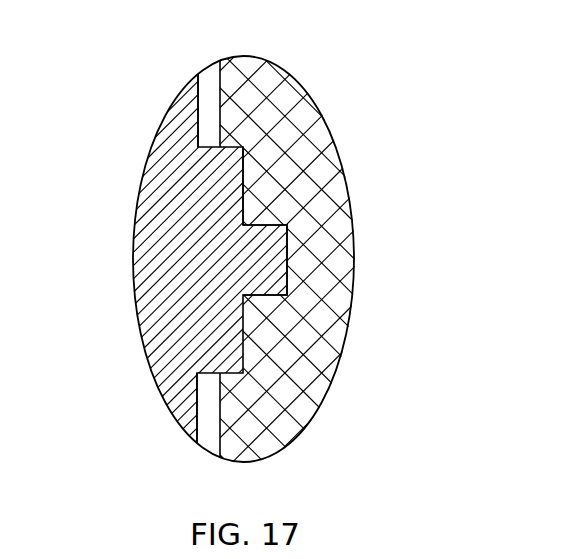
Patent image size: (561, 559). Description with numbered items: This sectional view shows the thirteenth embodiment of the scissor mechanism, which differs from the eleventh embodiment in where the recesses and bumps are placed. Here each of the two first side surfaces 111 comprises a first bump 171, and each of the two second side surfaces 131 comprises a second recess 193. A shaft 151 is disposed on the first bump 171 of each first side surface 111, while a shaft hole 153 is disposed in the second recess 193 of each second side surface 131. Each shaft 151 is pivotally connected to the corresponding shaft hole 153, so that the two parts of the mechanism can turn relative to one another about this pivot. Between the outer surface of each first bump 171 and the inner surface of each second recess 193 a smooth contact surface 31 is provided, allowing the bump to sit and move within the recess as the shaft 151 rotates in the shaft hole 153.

The first side surface 111 is at (203, 76).
The second side surface 131 is at (206, 72).
The shaft 151 is at (260, 260).
The shaft hole 153 is at (307, 257).
The first bump 171 is at (207, 372).
The second recess 193 is at (248, 345).
The smooth contact surface 31 is at (254, 186).